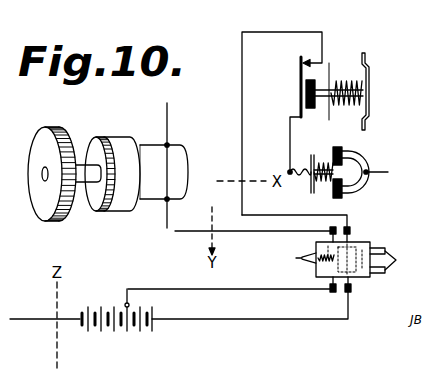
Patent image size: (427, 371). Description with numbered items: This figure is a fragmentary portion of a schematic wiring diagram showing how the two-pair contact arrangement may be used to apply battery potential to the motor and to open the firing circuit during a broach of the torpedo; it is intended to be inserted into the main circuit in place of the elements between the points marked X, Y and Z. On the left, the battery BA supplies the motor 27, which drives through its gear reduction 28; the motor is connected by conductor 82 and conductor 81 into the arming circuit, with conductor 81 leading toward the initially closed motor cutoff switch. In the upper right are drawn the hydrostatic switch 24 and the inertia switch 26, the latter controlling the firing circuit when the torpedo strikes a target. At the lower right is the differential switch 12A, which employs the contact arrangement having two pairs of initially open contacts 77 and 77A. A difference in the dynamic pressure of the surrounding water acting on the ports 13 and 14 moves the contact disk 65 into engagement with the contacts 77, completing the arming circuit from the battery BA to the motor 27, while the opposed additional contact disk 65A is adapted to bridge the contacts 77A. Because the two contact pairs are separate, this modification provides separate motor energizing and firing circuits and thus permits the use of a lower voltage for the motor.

The gear reduction 28 is at (101, 138).
The motor 27 is at (187, 168).
The conductor 82 is at (165, 212).
The conductor 81 is at (200, 231).
The hydrostatic switch 24 is at (371, 93).
The inertia switch 26 is at (363, 160).
The differential switch 12A is at (369, 276).
The port 14 is at (313, 257).
The port 13 is at (396, 260).
The contact disk 65 is at (332, 229).
The contacts 77A is at (352, 246).
The contacts 77 is at (332, 291).
The contact disk 65A is at (353, 285).
The battery BA is at (81, 320).